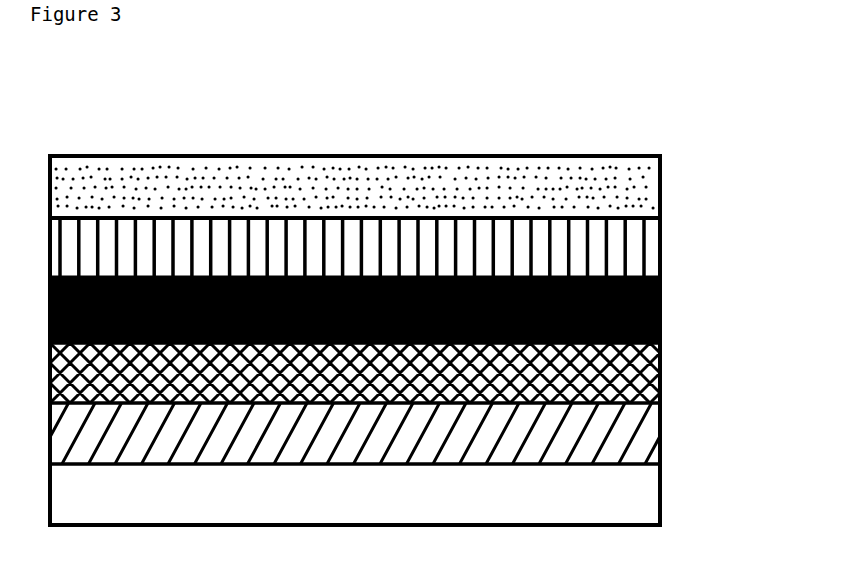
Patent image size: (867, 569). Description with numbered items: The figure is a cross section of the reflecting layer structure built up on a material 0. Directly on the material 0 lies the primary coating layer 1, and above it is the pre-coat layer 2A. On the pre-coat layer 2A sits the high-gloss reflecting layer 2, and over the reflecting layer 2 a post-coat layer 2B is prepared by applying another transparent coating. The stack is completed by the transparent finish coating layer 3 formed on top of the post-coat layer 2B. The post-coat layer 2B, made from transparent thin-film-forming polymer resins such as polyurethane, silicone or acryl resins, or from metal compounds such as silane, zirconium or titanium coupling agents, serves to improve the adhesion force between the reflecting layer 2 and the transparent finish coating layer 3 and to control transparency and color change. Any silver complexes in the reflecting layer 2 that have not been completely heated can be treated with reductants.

The material 0 is at (660, 498).
The primary coating layer 1 is at (660, 434).
The reflecting layer 2 is at (660, 315).
The pre-coat layer 2A is at (660, 377).
The post-coat layer 2B is at (660, 253).
The transparent finish coating layer 3 is at (660, 195).